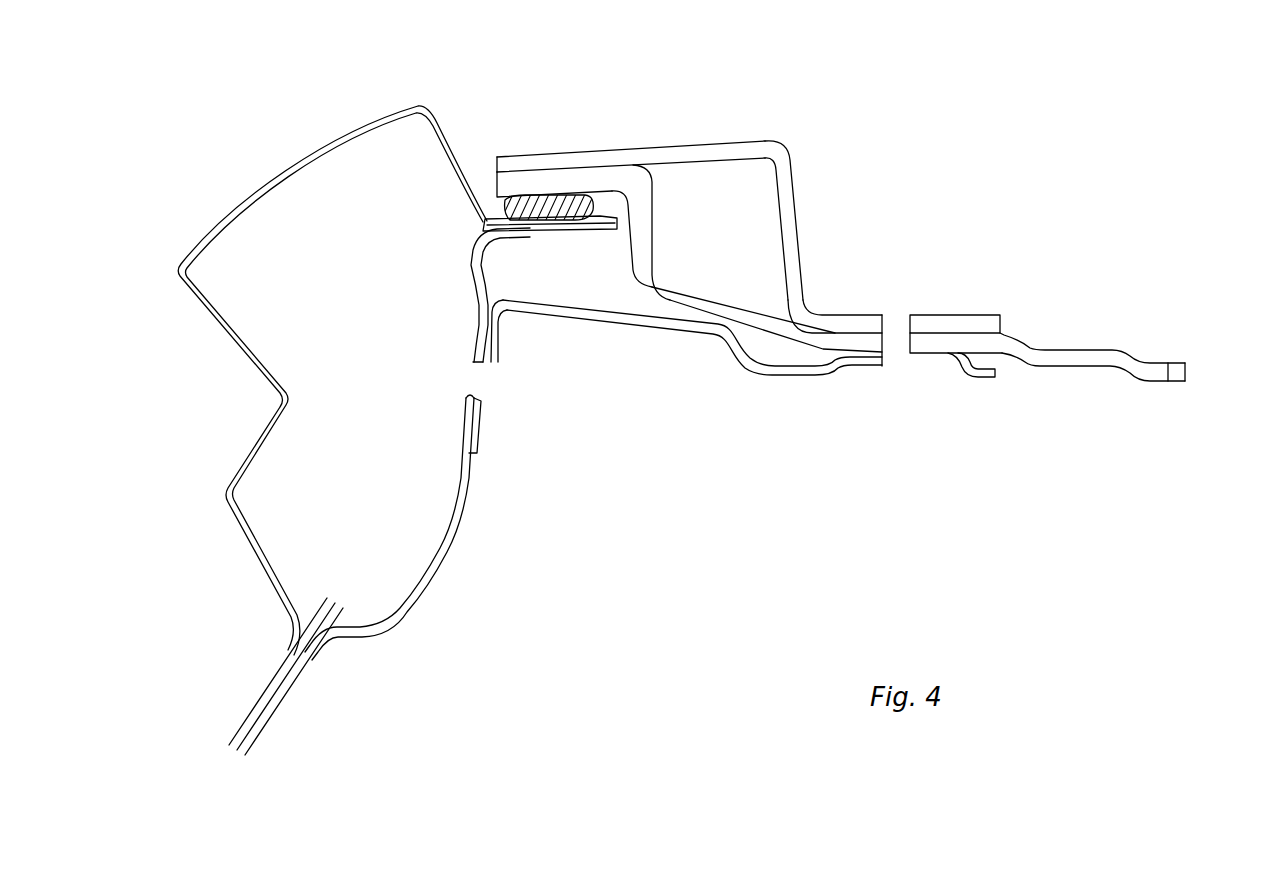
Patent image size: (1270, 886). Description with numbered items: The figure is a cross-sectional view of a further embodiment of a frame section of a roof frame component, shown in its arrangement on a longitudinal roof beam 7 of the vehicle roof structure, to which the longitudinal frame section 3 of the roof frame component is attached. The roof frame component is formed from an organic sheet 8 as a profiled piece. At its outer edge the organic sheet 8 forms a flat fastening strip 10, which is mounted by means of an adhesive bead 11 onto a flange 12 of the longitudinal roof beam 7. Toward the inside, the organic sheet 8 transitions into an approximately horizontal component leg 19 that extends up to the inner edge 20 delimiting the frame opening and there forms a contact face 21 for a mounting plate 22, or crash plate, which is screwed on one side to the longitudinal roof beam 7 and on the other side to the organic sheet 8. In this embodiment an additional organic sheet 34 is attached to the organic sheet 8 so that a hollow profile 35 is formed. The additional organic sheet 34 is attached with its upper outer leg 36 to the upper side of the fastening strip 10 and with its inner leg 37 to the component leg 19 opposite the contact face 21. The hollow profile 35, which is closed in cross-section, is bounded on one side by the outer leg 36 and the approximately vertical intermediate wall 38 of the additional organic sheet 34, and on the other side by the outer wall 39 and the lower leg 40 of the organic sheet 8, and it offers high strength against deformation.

The longitudinal frame section 3 is at (1070, 348).
The longitudinal roof beam 7 is at (443, 548).
The organic sheet 8 is at (812, 340).
The fastening strip 10 is at (533, 187).
The adhesive bead 11 is at (533, 207).
The flange 12 is at (566, 225).
The component leg 19 is at (940, 343).
The inner edge 20 is at (1184, 358).
The contact face 21 is at (984, 354).
The mounting plate 22 is at (624, 314).
The additional organic sheet 34 is at (689, 197).
The hollow profile 35 is at (681, 257).
The outer leg 36 is at (548, 165).
The inner leg 37 is at (935, 325).
The intermediate wall 38 is at (789, 152).
The outer wall 39 is at (640, 243).
The lower leg 40 is at (727, 310).